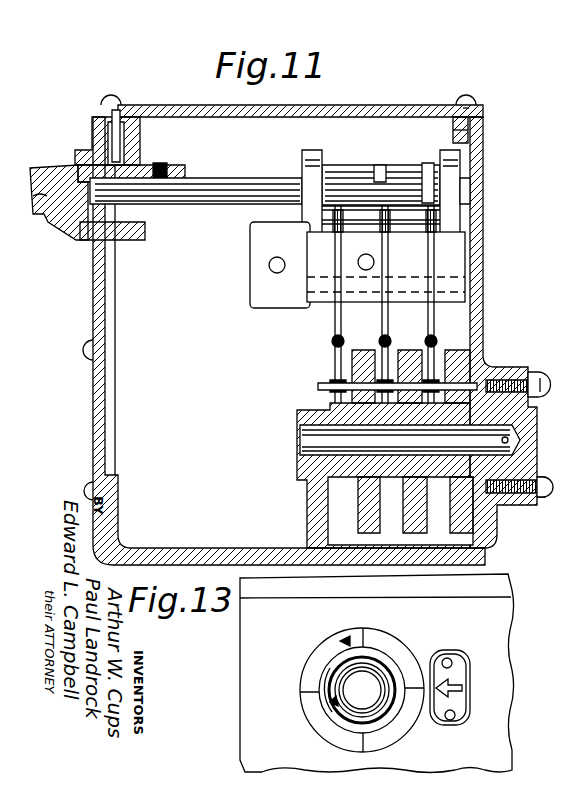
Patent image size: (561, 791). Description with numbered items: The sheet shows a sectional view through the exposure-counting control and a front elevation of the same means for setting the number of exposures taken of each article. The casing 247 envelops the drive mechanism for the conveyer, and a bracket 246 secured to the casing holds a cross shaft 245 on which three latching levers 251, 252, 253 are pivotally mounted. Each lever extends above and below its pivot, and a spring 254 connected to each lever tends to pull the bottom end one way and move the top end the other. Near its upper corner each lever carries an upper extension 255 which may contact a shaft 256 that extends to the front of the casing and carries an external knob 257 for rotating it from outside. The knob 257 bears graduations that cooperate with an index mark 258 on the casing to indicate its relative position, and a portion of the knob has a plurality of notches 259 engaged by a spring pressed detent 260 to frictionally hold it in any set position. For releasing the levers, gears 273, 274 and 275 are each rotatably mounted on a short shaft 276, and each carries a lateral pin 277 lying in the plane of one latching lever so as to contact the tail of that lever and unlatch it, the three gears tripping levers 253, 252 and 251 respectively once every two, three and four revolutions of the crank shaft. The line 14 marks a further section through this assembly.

In FIG. 11, the section line 14 is at (55, 58).
In FIG. 11, the cross shaft 245 is at (400, 274).
In FIG. 11, the bracket 246 is at (312, 252).
In FIG. 11, the casing 247 is at (487, 324).
In FIG. 13, the casing 247 is at (502, 729).
In FIG. 11, the latching lever 251 is at (334, 321).
In FIG. 11, the latching lever 252 is at (381, 328).
In FIG. 11, the latching lever 253 is at (431, 327).
In FIG. 11, the spring 254 is at (334, 350).
In FIG. 11, the upper extension 255 is at (384, 168).
In FIG. 11, the shaft 256 is at (331, 163).
In FIG. 11, the knob 257 is at (46, 226).
In FIG. 13, the knob 257 is at (385, 665).
In FIG. 13, the index mark 258 is at (438, 690).
In FIG. 11, the notch 259 is at (147, 229).
In FIG. 11, the spring pressed detent 260 is at (146, 150).
In FIG. 11, the gear 273 is at (462, 508).
In FIG. 11, the gear 274 is at (412, 512).
In FIG. 11, the gear 275 is at (360, 503).
In FIG. 11, the short shaft 276 is at (300, 440).
In FIG. 11, the lateral pin 277 is at (318, 386).